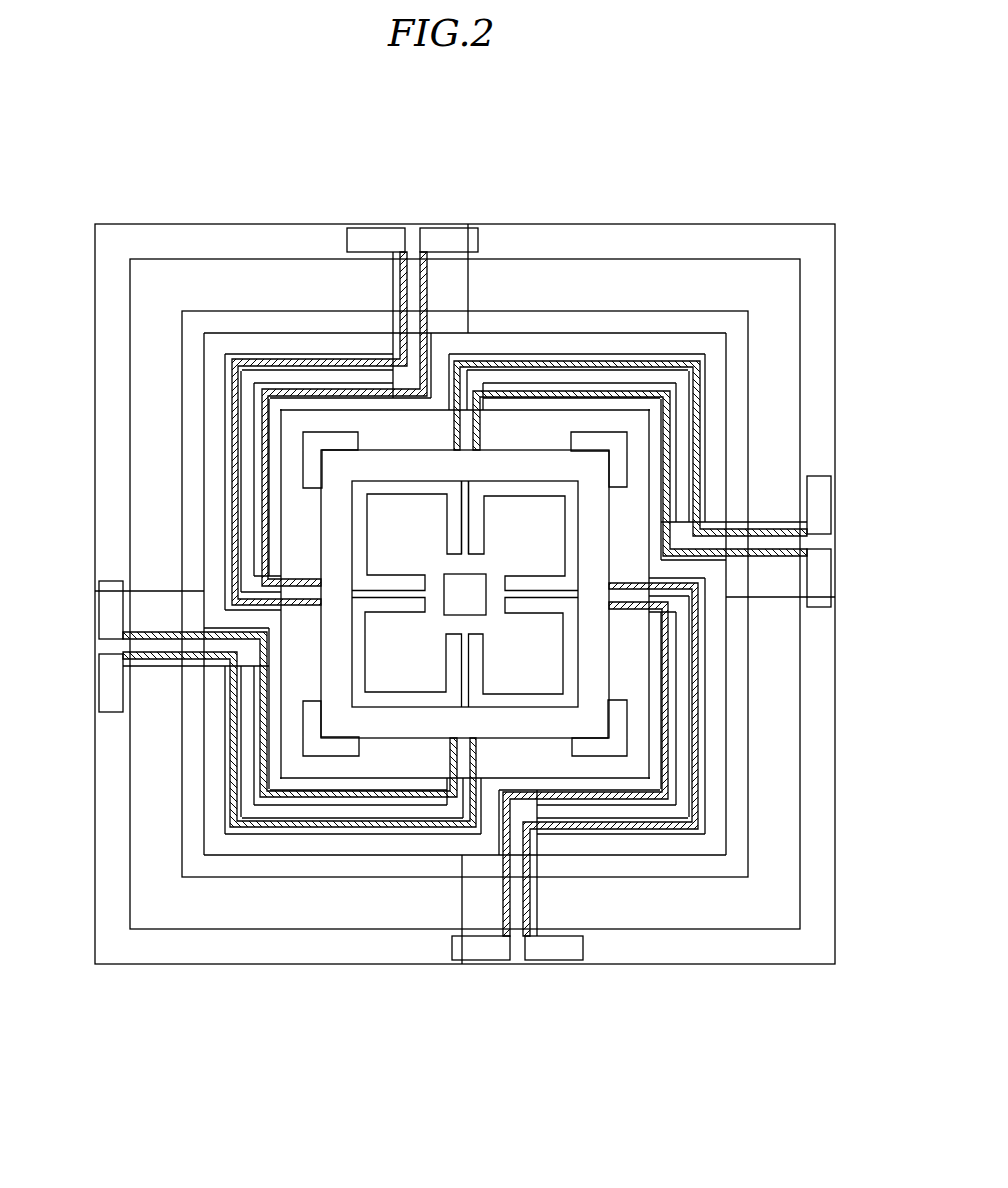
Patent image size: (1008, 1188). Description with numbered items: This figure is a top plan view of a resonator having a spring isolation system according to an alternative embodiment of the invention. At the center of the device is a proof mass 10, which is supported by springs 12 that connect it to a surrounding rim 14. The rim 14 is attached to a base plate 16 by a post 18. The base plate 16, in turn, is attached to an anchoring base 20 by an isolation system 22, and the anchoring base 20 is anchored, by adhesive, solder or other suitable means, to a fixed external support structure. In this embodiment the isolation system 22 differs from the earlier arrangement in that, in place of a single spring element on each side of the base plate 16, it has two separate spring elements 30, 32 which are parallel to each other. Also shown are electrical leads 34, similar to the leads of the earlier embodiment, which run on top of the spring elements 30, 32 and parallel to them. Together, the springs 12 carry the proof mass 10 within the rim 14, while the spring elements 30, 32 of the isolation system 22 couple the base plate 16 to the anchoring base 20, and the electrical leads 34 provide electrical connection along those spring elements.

The proof mass 10 is at (530, 662).
The springs 12 is at (465, 515).
The rim 14 is at (628, 666).
The base plate 16 is at (367, 422).
The post 18 is at (458, 585).
The anchoring base 20 is at (757, 963).
The isolation system 22 is at (700, 352).
The spring element 30 is at (297, 833).
The spring element 32 is at (373, 792).
The electrical leads 34 is at (427, 828).